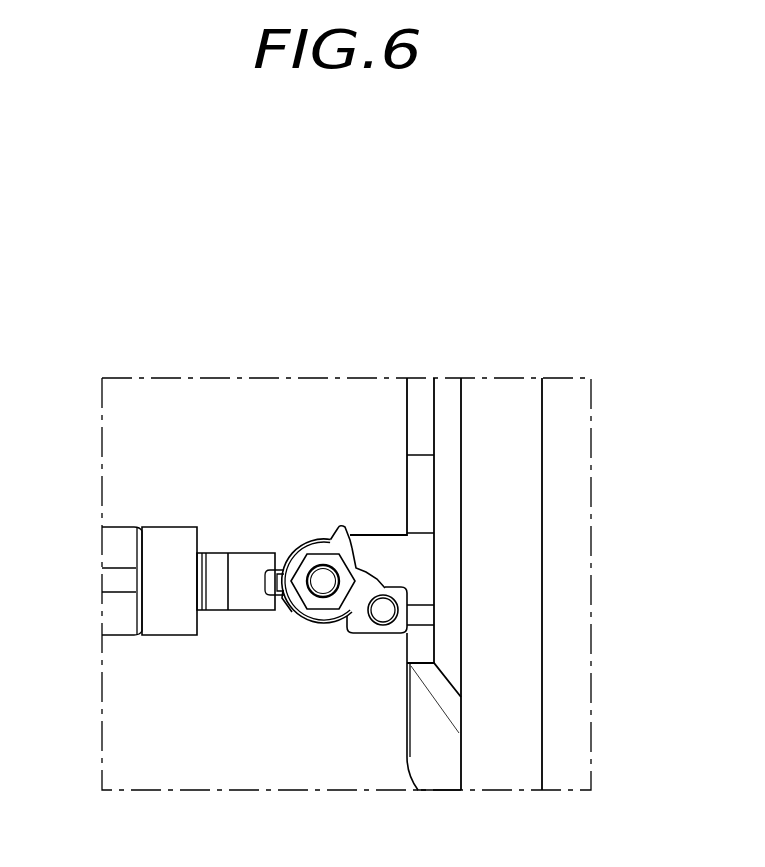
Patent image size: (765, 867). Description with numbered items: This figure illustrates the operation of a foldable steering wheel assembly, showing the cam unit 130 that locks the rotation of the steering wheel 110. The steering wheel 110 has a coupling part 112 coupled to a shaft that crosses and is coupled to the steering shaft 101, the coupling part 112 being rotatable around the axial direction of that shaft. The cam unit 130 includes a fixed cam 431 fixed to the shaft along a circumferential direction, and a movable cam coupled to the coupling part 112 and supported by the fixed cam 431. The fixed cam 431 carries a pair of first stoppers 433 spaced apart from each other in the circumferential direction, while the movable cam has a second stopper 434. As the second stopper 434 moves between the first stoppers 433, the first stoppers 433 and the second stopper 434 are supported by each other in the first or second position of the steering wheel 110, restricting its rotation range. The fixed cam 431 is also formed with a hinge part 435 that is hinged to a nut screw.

The steering shaft 101 is at (216, 589).
The steering wheel 110 is at (513, 578).
The coupling part 112 is at (390, 515).
The cam unit 130 is at (293, 538).
The fixed cam 431 is at (318, 612).
The first stoppers 433 is at (338, 524).
The second stopper 434 is at (264, 581).
The hinge part 435 is at (397, 622).